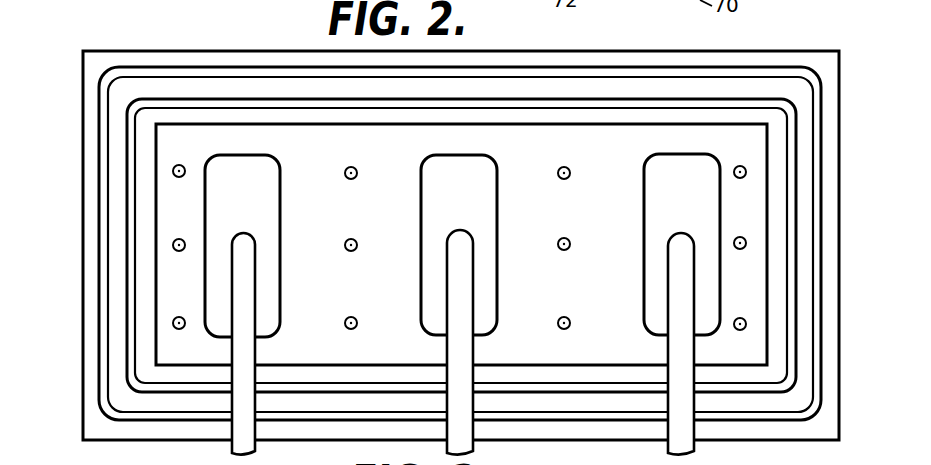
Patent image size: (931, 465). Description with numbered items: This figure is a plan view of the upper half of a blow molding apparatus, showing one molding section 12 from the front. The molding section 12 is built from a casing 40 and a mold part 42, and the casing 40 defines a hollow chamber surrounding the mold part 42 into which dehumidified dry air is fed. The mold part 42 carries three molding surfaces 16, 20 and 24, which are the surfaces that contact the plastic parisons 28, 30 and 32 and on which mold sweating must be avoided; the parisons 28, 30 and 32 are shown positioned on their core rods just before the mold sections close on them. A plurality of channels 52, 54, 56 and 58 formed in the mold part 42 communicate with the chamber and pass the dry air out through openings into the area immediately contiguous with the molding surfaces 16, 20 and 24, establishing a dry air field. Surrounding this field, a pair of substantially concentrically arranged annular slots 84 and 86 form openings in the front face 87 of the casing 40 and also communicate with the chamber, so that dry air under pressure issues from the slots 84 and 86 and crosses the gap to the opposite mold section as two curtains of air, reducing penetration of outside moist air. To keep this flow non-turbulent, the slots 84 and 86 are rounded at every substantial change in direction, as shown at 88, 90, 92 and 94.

The molding section 12 is at (840, 210).
The molding surface 16 is at (262, 182).
The mold surface 20 is at (487, 181).
The mold surface 24 is at (662, 176).
The plastic parison 28 is at (247, 272).
The plastic parison 30 is at (463, 275).
The plastic parison 32 is at (675, 286).
The casing 40 is at (83, 225).
The mold part 42 is at (262, 132).
The channel 52 is at (184, 318).
The channel 54 is at (356, 318).
The channel 56 is at (568, 318).
The channel 58 is at (738, 319).
The annular slot 84 is at (795, 133).
The annular slot 86 is at (815, 292).
The front face 87 is at (792, 55).
The rounded slot portion 88 is at (180, 67).
The rounded slot portion 90 is at (114, 413).
The rounded slot portion 92 is at (812, 408).
The rounded slot portion 94 is at (790, 110).